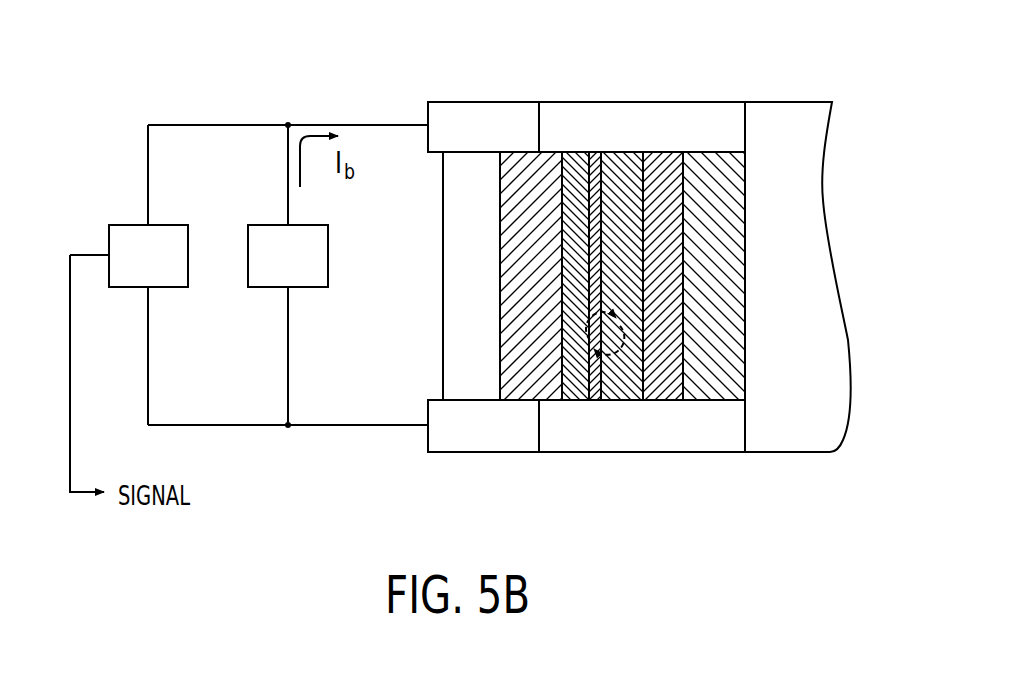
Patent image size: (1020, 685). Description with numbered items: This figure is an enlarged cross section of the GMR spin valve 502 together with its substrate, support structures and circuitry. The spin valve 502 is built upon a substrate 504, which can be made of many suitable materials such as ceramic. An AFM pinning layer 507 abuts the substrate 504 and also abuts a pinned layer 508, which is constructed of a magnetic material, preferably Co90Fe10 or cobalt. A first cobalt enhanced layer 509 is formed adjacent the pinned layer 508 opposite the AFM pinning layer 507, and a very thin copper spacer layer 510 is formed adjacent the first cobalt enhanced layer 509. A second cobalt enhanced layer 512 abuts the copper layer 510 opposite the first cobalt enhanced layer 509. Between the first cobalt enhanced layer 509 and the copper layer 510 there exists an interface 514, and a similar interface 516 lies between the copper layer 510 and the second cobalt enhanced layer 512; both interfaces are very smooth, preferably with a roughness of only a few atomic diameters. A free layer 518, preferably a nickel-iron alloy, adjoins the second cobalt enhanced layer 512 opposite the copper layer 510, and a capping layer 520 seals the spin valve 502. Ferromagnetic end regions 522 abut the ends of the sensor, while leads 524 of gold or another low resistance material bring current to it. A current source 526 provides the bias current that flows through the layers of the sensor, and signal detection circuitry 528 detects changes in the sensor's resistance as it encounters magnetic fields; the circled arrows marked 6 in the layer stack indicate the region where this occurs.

The GMR spin valve 502 is at (810, 58).
The substrate 504 is at (810, 170).
The AFM pinning layer 507 is at (738, 383).
The pinned layer 508 is at (675, 170).
The first cobalt enhanced layer 509 is at (628, 383).
The copper spacer layer 510 is at (593, 170).
The second cobalt enhanced layer 512 is at (582, 383).
The interface 514 is at (603, 202).
The interface 516 is at (589, 248).
The free layer 518 is at (522, 170).
The capping layer 520 is at (463, 320).
The ferromagnetic end regions 522 is at (713, 108).
The leads 524 is at (470, 110).
The current source 526 is at (267, 275).
The signal detection circuitry 528 is at (132, 275).
The magnetization rotation 6 is at (617, 333).